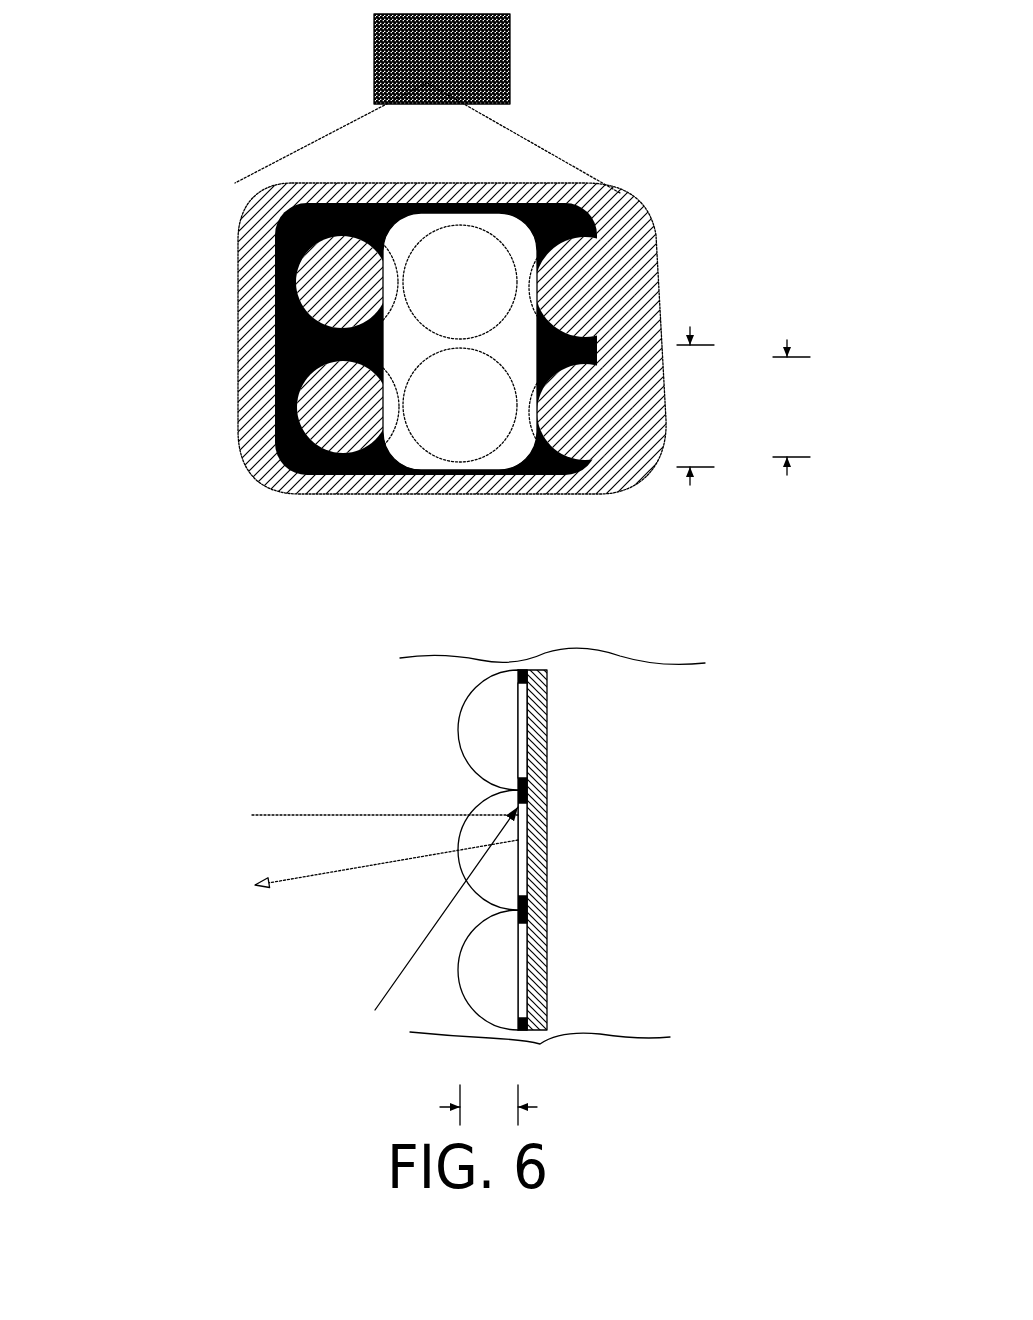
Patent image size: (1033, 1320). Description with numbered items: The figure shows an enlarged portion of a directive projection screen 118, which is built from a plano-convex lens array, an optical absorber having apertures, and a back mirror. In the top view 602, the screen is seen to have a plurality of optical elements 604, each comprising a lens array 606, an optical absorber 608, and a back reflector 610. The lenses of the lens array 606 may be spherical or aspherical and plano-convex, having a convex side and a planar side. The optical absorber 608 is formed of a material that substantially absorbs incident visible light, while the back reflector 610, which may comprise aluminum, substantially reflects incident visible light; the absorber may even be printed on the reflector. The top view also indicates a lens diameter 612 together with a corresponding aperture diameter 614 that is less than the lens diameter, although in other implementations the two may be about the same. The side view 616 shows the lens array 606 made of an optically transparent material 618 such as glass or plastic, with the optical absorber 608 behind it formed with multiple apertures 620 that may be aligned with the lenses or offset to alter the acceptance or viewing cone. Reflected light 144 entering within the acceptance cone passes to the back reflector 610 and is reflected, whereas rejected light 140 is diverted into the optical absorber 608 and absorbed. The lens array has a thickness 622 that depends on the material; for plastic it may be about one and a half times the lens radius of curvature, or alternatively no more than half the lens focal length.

The directive projection screen 118 is at (510, 55).
The top view 602 is at (238, 118).
The back reflector 610 is at (650, 262).
The optical absorber 608 is at (417, 749).
The optical elements 604 is at (237, 477).
The lens array 606 is at (630, 952).
The lens diameter 612 is at (688, 443).
The aperture diameter 614 is at (785, 449).
The side view 616 is at (222, 600).
The optically transparent material 618 is at (470, 722).
The apertures 620 is at (520, 742).
The reflected light 144 is at (326, 834).
The rejected light 140 is at (400, 937).
The thickness 622 is at (386, 1103).